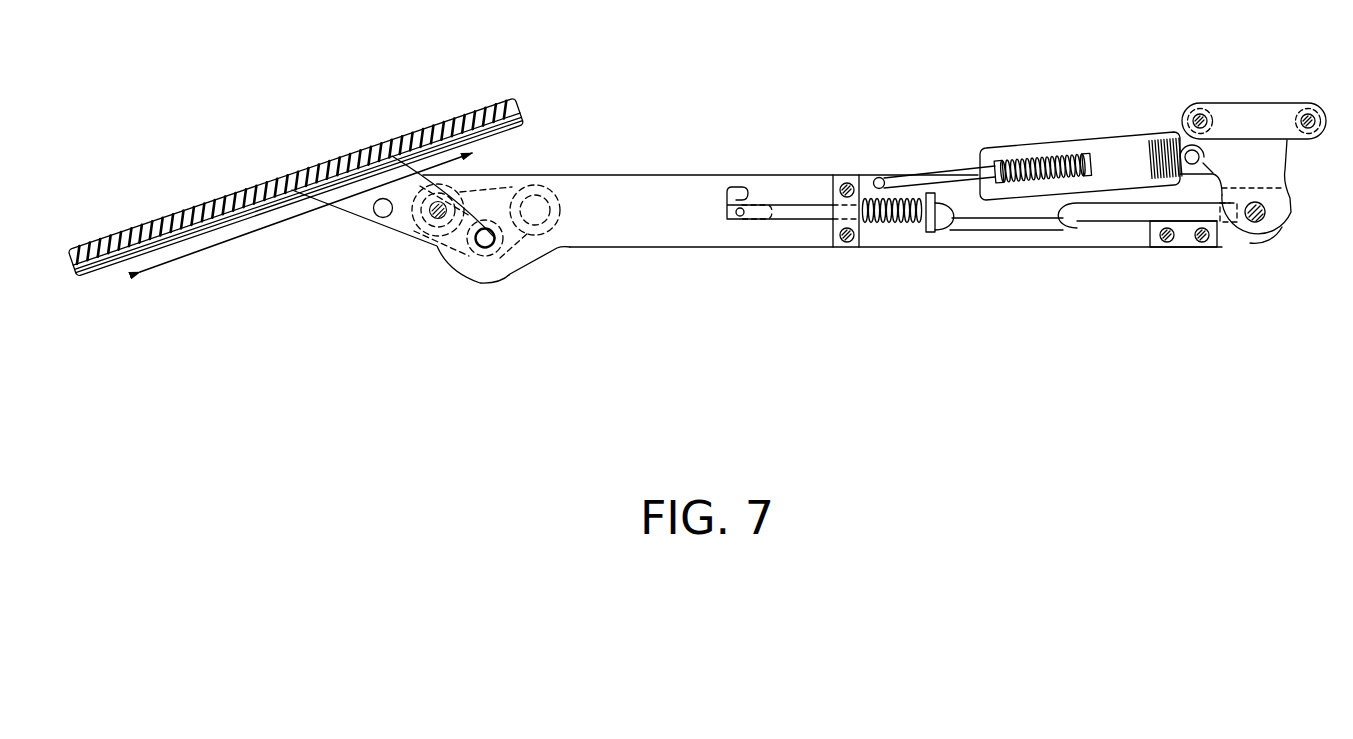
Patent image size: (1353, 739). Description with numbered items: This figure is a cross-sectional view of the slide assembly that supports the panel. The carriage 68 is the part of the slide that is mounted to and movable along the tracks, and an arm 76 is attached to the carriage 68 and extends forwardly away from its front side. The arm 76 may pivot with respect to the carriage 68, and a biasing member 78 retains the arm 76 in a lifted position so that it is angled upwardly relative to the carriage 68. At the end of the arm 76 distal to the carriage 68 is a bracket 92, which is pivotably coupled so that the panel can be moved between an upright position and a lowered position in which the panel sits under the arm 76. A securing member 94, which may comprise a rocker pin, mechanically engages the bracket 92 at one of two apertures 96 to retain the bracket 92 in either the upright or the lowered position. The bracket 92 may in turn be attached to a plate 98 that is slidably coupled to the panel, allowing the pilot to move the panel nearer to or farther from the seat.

The carriage 68 is at (1250, 102).
The arm 76 is at (680, 248).
The biasing member 78 is at (1010, 148).
The bracket 92 is at (384, 218).
The securing member 94 is at (495, 240).
The apertures 96 is at (380, 228).
The plate 98 is at (340, 180).